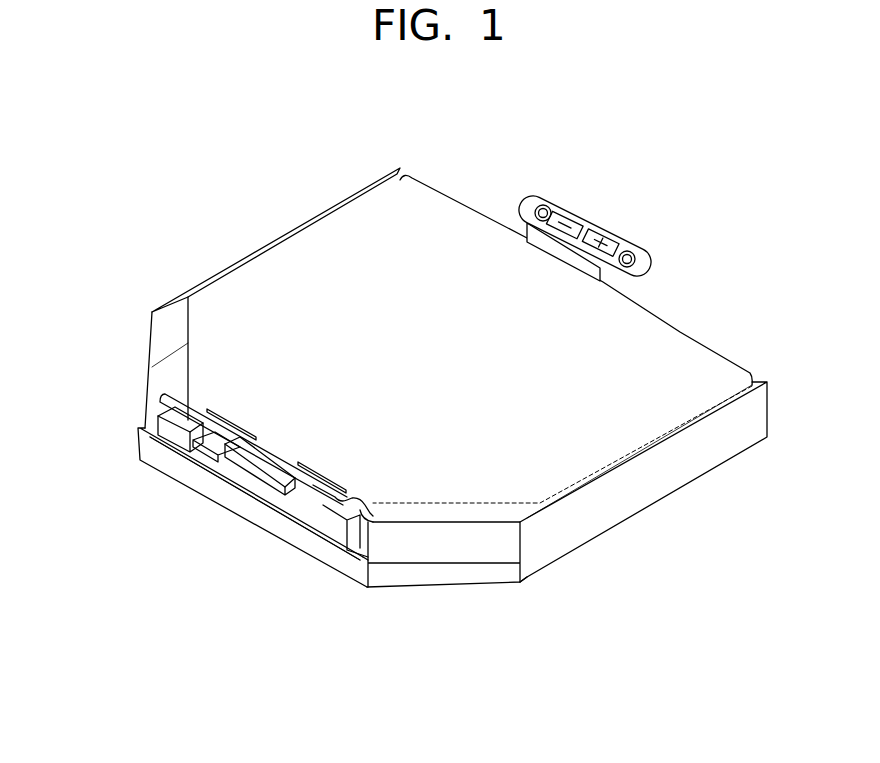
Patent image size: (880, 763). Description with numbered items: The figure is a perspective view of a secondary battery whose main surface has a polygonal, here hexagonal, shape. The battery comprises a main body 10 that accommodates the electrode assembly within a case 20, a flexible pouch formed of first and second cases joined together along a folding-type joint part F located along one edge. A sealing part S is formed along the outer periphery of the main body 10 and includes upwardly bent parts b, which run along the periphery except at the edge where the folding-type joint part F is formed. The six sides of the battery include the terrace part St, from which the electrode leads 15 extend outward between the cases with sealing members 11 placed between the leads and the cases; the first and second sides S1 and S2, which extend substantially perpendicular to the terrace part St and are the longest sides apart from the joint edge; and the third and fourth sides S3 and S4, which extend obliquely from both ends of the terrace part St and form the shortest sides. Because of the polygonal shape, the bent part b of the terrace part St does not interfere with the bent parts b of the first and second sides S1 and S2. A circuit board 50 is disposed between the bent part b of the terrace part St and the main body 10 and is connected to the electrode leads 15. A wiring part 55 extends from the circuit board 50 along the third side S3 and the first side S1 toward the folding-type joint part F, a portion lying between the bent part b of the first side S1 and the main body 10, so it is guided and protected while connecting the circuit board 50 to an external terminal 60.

The main body 10 is at (453, 360).
The sealing members 11 is at (175, 443).
The electrode leads 15 is at (305, 498).
The case 20 is at (463, 217).
The circuit board 50 is at (350, 493).
The wiring part 55 is at (445, 530).
The external terminal 60 is at (600, 224).
The sealing part S is at (473, 572).
The first side S1 is at (665, 512).
The second side S2 is at (255, 232).
The third side S3 is at (437, 601).
The fourth side S4 is at (130, 402).
The terrace part St is at (243, 533).
The folding-type joint part F is at (683, 302).
The bent part b is at (170, 295).